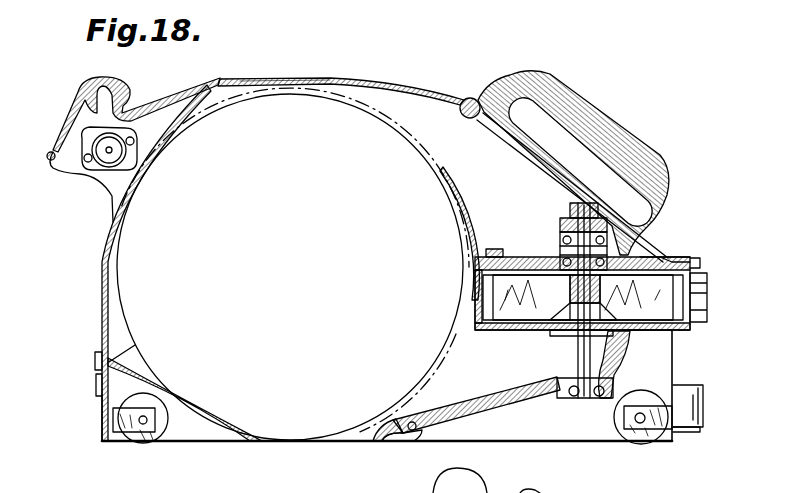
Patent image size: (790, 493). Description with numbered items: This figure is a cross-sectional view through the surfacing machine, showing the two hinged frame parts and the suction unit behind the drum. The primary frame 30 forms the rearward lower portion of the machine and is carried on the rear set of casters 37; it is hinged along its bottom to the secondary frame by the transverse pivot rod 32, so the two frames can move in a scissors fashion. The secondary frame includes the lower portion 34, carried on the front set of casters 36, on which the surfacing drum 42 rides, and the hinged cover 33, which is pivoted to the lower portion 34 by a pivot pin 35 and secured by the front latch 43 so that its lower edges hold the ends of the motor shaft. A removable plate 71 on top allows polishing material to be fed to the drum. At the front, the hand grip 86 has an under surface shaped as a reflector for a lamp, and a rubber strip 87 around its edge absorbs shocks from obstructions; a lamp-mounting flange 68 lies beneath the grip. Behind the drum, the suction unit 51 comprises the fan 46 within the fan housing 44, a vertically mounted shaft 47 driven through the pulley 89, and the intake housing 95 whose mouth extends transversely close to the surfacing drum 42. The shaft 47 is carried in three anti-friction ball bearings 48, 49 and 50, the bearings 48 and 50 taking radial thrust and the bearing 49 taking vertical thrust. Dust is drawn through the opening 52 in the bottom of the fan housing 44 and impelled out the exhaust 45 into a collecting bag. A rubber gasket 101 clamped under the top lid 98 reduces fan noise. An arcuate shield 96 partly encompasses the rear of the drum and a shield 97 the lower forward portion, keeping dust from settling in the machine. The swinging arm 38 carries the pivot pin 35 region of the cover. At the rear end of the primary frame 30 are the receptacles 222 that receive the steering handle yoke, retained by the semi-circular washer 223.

The primary frame 30 is at (541, 432).
The transverse pivot rod 32 is at (393, 441).
The hinged cover 33 is at (102, 325).
The lower portion of the secondary frame 34 is at (102, 402).
The pivot pin 35 is at (476, 98).
The front set of casters 36 is at (140, 445).
The rear set of casters 37 is at (640, 440).
The arm 38 is at (622, 128).
The surfacing drum 42 is at (290, 441).
The front latch 43 is at (95, 375).
The fan housing 44 is at (680, 330).
The exhaust 45 is at (702, 308).
The fan 46 is at (583, 297).
The vertically mounted shaft 47 is at (578, 370).
The anti-friction ball bearing 48 is at (570, 398).
The anti-friction ball bearing 49 is at (560, 258).
The anti-friction ball bearing 50 is at (560, 236).
The suction unit 51 is at (717, 271).
The opening 52 is at (566, 336).
The bearing flange 68 is at (96, 170).
The removable plate 71 is at (312, 79).
The front hand grip 86 is at (78, 88).
The rubber strip 87 is at (47, 154).
The pulley 89 is at (568, 215).
The intake housing 95 is at (476, 402).
The arcuate shield 96 is at (462, 186).
The shield 97 is at (210, 441).
The top lid 98 is at (696, 258).
The rubber gasket 101 is at (690, 257).
The receptacles 222 is at (704, 410).
The semi-circular washer 223 is at (702, 430).